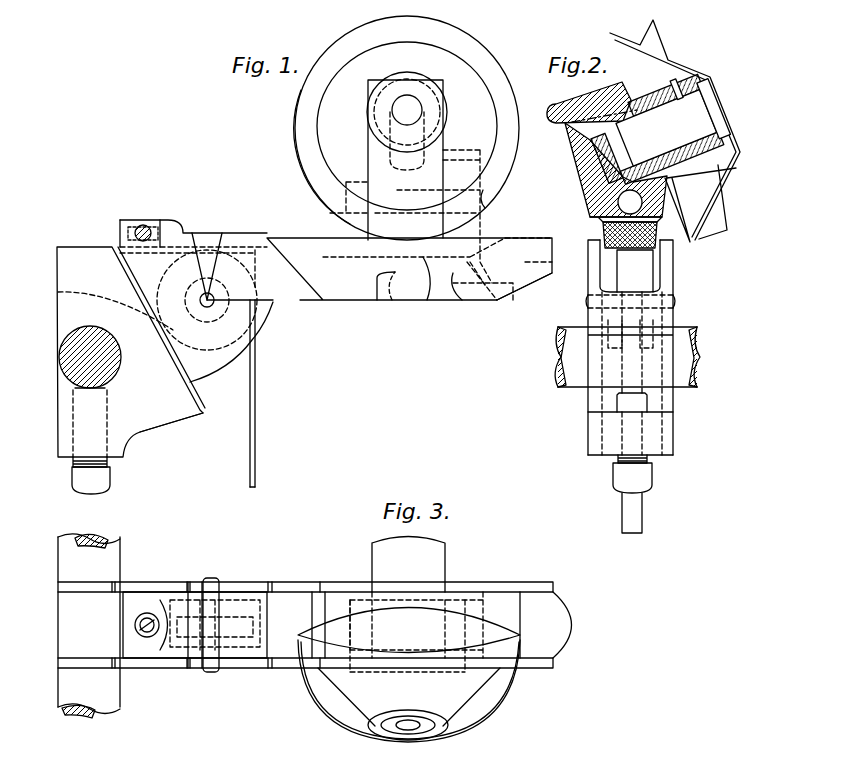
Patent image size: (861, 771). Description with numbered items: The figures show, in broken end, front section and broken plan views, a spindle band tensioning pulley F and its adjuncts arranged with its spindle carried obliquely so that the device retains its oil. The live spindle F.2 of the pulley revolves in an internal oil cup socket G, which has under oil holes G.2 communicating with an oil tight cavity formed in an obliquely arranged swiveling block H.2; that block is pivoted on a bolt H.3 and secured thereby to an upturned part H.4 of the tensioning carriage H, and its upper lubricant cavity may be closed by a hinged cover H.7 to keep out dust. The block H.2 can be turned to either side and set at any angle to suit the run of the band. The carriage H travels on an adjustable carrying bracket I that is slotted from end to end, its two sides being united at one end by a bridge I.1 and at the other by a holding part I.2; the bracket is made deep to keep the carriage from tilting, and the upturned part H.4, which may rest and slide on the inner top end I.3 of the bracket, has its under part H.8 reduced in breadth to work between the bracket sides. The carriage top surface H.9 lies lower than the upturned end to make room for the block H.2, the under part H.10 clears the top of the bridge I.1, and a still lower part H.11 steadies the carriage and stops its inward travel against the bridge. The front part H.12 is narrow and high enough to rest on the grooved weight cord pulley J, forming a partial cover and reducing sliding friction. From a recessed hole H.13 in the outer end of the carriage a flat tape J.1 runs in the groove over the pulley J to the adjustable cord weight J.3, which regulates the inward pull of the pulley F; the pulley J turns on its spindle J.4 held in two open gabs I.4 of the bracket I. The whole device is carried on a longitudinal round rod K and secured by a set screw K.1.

In FIG. 1, the tensioning pulley F is at (388, 106).
In FIG. 2, the tensioning pulley F is at (730, 117).
In FIG. 3, the tensioning pulley F is at (409, 671).
In FIG. 1, the live spindle F.2 is at (416, 114).
In FIG. 2, the live spindle F.2 is at (666, 128).
In FIG. 2, the internal oil cup socket G is at (590, 174).
In FIG. 2, the under oil holes G.2 is at (688, 172).
In FIG. 1, the tensioning carriage H is at (316, 238).
In FIG. 3, the tensioning carriage H is at (328, 592).
In FIG. 1, the obliquely arranged swiveling block H.2 is at (378, 136).
In FIG. 1, the bolt H.3 is at (356, 196).
In FIG. 2, the bolt H.3 is at (630, 235).
In FIG. 1, the upturned part H.4 is at (505, 290).
In FIG. 2, the upturned part H.4 is at (588, 241).
In FIG. 2, the hinged cover H.7 is at (560, 104).
In FIG. 3, the hinged cover H.7 is at (408, 565).
In FIG. 1, the under part H.8 is at (462, 300).
In FIG. 2, the under part H.8 is at (600, 220).
In FIG. 1, the top surface H.9 is at (427, 301).
In FIG. 1, the under part H.10 is at (392, 300).
In FIG. 1, the lower part H.11 is at (376, 296).
In FIG. 1, the front part H.12 is at (216, 233).
In FIG. 1, the recessed hole H.13 is at (152, 218).
In FIG. 3, the recessed hole H.13 is at (147, 638).
In FIG. 1, the adjustable carrying bracket I is at (84, 247).
In FIG. 2, the adjustable carrying bracket I is at (672, 427).
In FIG. 3, the adjustable carrying bracket I is at (93, 662).
In FIG. 1, the bridge I.1 is at (497, 301).
In FIG. 3, the bridge I.1 is at (505, 610).
In FIG. 1, the holding part I.2 is at (170, 415).
In FIG. 2, the holding part I.2 is at (668, 452).
In FIG. 1, the inner top end I.3 is at (532, 240).
In FIG. 3, the inner top end I.3 is at (565, 597).
In FIG. 1, the open gabs I.4 is at (262, 332).
In FIG. 3, the open gabs I.4 is at (192, 582).
In FIG. 1, the grooved weight cord pulley J is at (212, 338).
In FIG. 2, the grooved weight cord pulley J is at (647, 281).
In FIG. 1, the flat tape J.1 is at (257, 368).
In FIG. 2, the flat tape J.1 is at (643, 521).
In FIG. 1, the adjustable cord weight J.3 is at (256, 471).
In FIG. 1, the spindle J.4 is at (273, 300).
In FIG. 2, the spindle J.4 is at (676, 300).
In FIG. 3, the spindle J.4 is at (212, 580).
In FIG. 1, the longitudinal round rod K is at (59, 366).
In FIG. 2, the longitudinal round rod K is at (697, 345).
In FIG. 3, the longitudinal round rod K is at (58, 560).
In FIG. 1, the set screw K.1 is at (82, 483).
In FIG. 2, the set screw K.1 is at (652, 486).